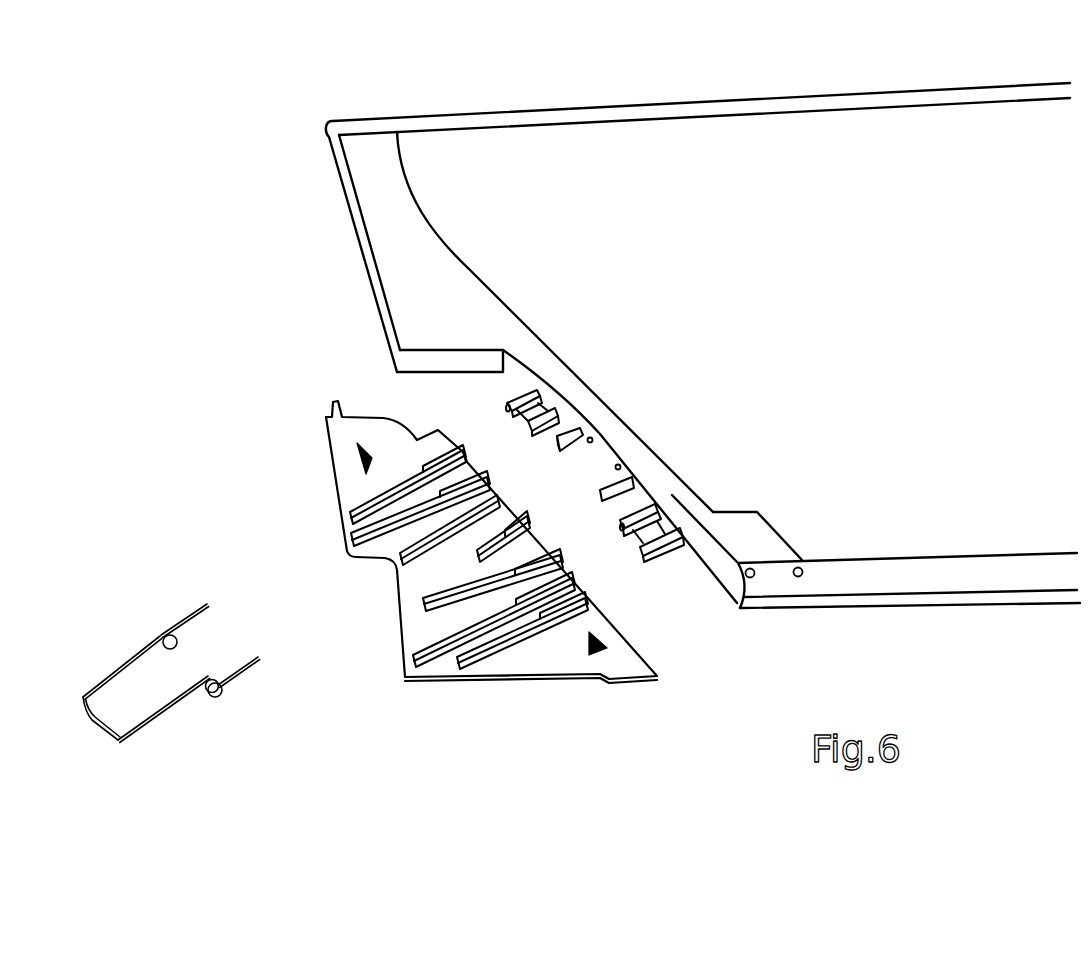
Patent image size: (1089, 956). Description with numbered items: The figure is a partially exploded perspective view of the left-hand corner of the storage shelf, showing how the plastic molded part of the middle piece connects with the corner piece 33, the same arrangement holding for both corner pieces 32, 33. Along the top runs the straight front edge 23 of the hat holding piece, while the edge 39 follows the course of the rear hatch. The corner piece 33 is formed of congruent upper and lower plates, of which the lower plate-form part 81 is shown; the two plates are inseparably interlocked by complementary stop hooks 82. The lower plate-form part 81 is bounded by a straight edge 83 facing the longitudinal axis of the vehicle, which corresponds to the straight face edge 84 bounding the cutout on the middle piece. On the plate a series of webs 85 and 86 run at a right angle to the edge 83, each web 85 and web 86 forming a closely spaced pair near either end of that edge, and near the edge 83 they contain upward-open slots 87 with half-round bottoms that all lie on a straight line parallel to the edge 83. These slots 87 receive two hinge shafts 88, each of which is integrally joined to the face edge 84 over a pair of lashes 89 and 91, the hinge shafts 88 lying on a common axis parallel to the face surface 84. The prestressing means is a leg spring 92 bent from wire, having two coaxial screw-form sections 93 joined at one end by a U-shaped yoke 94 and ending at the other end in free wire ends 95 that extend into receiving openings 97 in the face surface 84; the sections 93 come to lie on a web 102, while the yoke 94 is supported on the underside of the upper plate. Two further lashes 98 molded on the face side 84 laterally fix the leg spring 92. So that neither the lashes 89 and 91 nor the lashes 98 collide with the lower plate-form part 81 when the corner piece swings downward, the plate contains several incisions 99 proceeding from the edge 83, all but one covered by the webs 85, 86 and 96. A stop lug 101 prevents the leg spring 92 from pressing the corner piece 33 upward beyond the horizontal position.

The front edge 23 is at (652, 104).
The corner piece 32 is at (327, 783).
The corner piece 33 is at (352, 724).
The edge 39 is at (892, 597).
The lower plate-form part 81 is at (550, 680).
The stop hooks 82 is at (358, 458).
The straight edge 83 is at (610, 618).
The face edge 84 is at (718, 562).
The web 85 is at (375, 535).
The web 86 is at (347, 522).
The slots 87 is at (472, 452).
The hinge shafts 88 is at (552, 408).
The lash 89 is at (522, 396).
The lash 91 is at (583, 428).
The leg spring 92 is at (193, 648).
The screw-form sections 93 is at (178, 640).
The U-shaped yoke 94 is at (100, 730).
The free wire ends 95 is at (205, 605).
The web 96 is at (498, 497).
The receiving openings 97 is at (620, 466).
The lashes 98 is at (660, 502).
The incisions 99 is at (497, 520).
The stop lug 101 is at (337, 400).
The web 102 is at (538, 527).